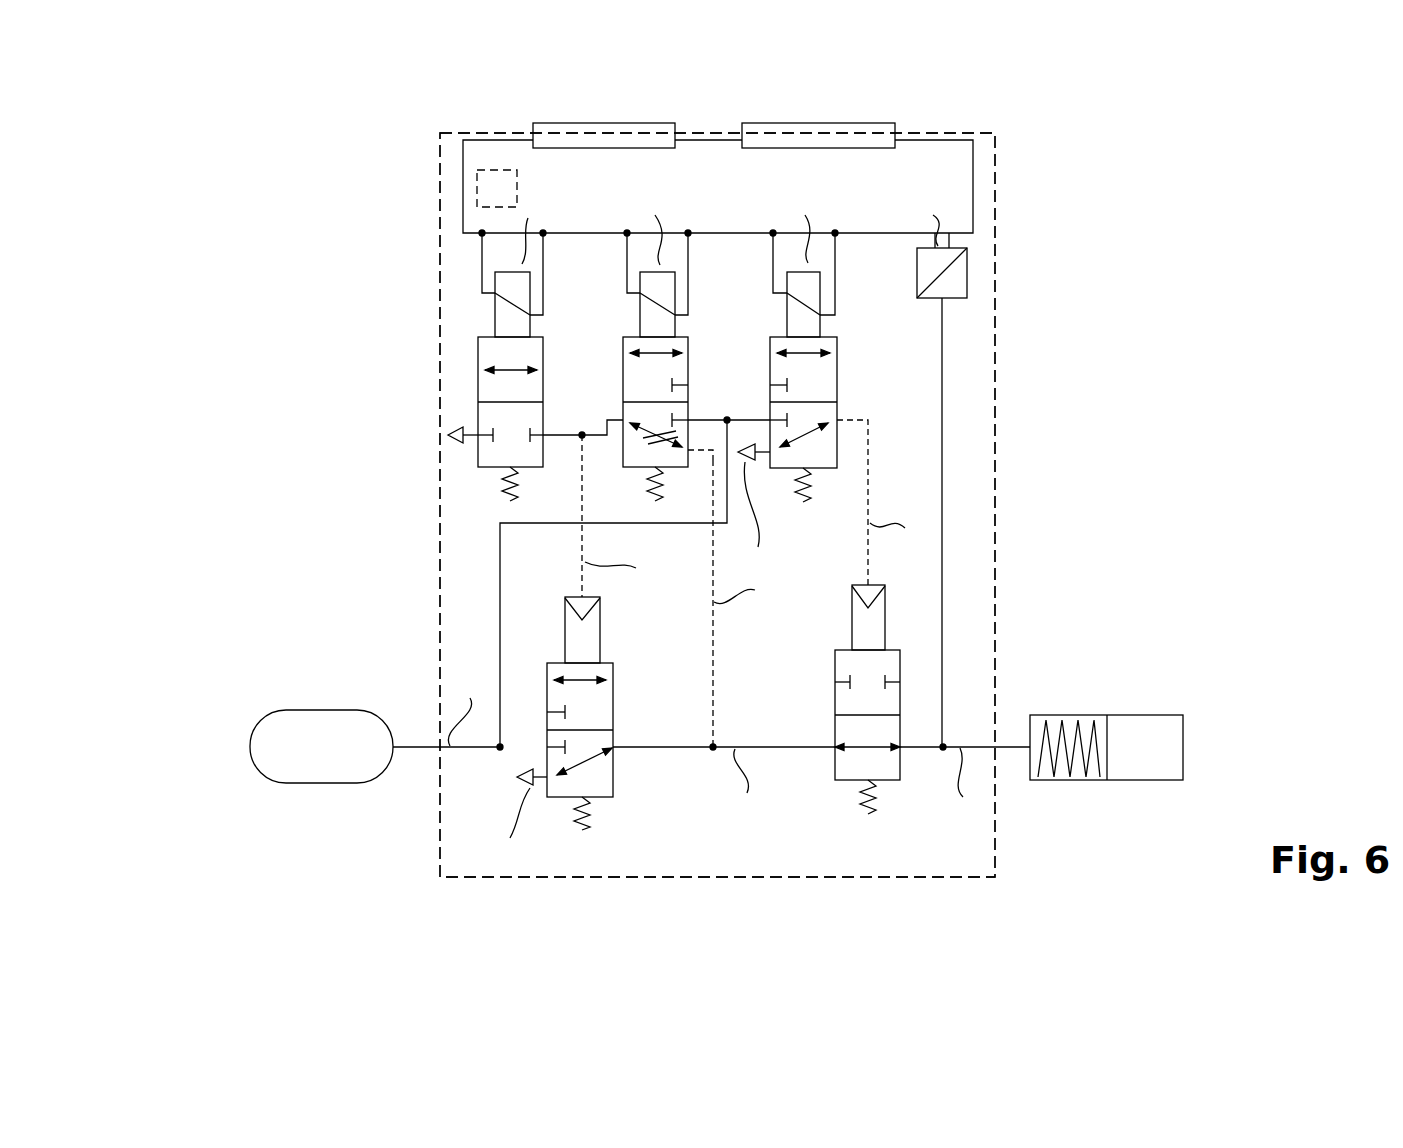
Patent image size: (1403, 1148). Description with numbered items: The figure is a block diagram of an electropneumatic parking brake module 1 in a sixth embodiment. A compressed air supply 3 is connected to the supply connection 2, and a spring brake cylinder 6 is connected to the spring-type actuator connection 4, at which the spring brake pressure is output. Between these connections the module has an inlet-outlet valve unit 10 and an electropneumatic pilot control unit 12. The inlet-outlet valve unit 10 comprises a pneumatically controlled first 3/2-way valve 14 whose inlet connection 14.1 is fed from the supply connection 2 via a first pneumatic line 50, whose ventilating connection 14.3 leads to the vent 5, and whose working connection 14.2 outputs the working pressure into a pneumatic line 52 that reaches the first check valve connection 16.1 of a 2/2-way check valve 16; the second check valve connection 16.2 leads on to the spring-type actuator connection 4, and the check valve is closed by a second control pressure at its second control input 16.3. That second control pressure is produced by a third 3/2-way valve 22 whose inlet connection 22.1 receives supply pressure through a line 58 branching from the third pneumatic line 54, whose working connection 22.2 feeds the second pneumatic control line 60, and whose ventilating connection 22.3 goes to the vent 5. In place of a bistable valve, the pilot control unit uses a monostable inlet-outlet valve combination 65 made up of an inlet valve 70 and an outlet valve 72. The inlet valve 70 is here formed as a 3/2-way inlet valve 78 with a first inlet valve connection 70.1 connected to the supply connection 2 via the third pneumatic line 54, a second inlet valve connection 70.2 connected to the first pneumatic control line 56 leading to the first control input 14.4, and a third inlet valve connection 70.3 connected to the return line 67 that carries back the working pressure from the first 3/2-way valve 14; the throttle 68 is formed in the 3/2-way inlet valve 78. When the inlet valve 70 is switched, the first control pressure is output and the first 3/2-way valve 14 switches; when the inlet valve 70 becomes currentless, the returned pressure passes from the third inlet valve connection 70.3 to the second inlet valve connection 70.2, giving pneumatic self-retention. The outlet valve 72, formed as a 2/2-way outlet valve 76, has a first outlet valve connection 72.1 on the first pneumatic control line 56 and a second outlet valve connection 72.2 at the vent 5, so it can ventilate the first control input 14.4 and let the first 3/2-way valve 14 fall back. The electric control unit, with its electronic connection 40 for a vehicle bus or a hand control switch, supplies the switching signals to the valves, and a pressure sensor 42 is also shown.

The electropneumatic parking brake module 1 is at (258, 186).
The supply connection 2 is at (420, 746).
The compressed air supply 3 is at (326, 770).
The spring-type actuator connection 4 is at (996, 746).
The vent 5 is at (455, 440).
The spring brake cylinder 6 is at (1107, 780).
The inlet-outlet valve unit 10 is at (707, 818).
The electropneumatic pilot control unit 12 is at (477, 325).
The first 3/2-way valve 14 is at (563, 662).
The inlet connection of the first 3/2-way valve 14.1 is at (548, 742).
The working connection of the first 3/2-way valve 14.2 is at (617, 750).
The ventilating connection of the first 3/2-way valve 14.3 is at (548, 785).
The first control input of the first 3/2-way valve 14.4 is at (587, 635).
The 2/2-way check valve 16 is at (848, 650).
The first check valve connection 16.1 is at (834, 746).
The second check valve connection 16.2 is at (901, 750).
The second control input of the check valve 16.3 is at (876, 622).
The third 3/2-way valve 22 is at (840, 337).
The inlet connection of the third 3/2-way valve 22.1 is at (768, 418).
The working connection of the third 3/2-way valve 22.2 is at (831, 420).
The ventilating connection of the third 3/2-way valve 22.3 is at (760, 462).
The electronic connection 40 is at (497, 190).
The pressure sensor 42 is at (967, 270).
The first pneumatic line 50 is at (527, 752).
The pneumatic line 52 is at (773, 749).
The third pneumatic line 54 is at (499, 582).
The first pneumatic control line 56 is at (581, 505).
The pneumatic line to the third 3/2-way valve 58 is at (738, 424).
The second pneumatic control line 60 is at (870, 458).
The monostable inlet-outlet valve combination 65 is at (431, 264).
The return line 67 is at (714, 655).
The throttle 68 is at (650, 445).
The inlet valve 70 is at (681, 337).
The first inlet valve connection 70.1 is at (700, 412).
The second inlet valve connection 70.2 is at (627, 420).
The third inlet valve connection 70.3 is at (689, 453).
The outlet valve 72 is at (534, 337).
The first outlet valve connection 72.1 is at (548, 432).
The second outlet valve connection 72.2 is at (478, 433).
The 2/2-way outlet valve 76 is at (553, 285).
The 3/2-way inlet valve 78 is at (701, 285).